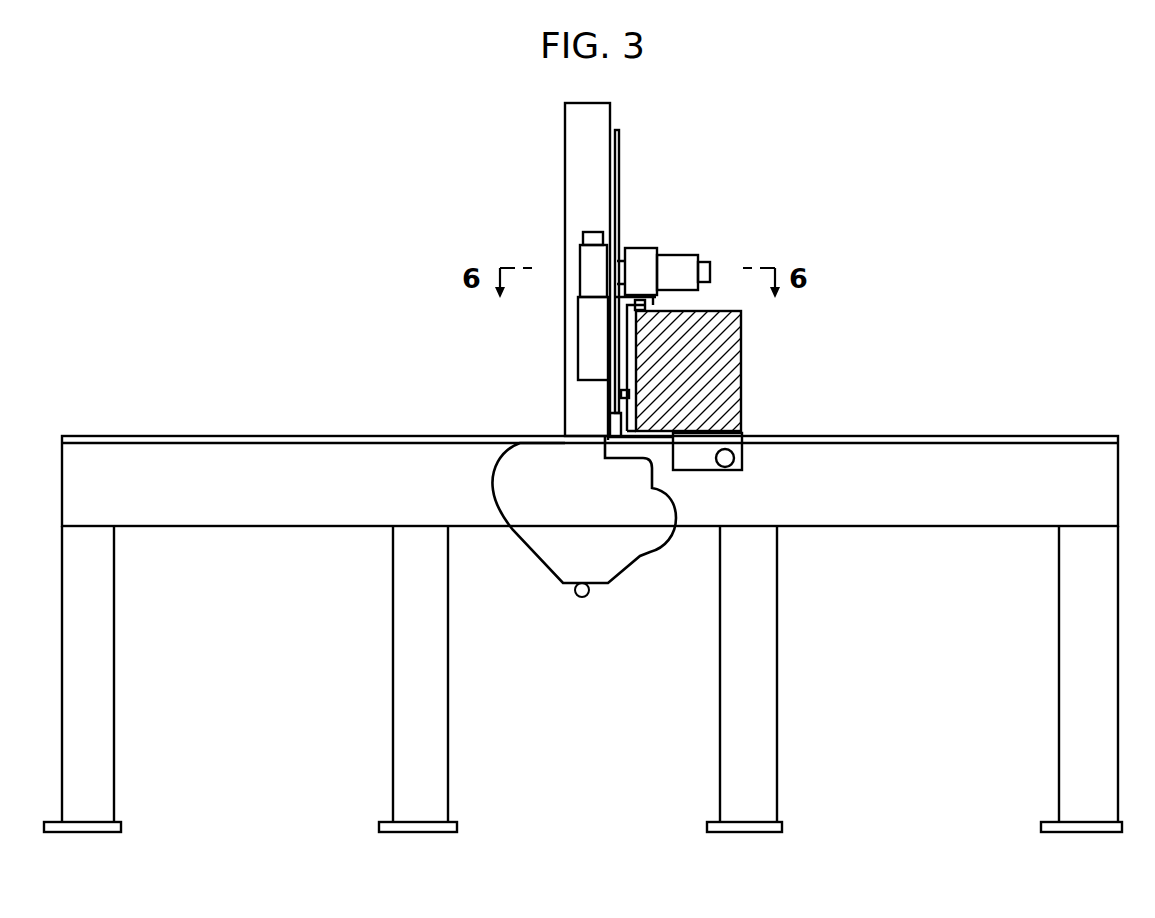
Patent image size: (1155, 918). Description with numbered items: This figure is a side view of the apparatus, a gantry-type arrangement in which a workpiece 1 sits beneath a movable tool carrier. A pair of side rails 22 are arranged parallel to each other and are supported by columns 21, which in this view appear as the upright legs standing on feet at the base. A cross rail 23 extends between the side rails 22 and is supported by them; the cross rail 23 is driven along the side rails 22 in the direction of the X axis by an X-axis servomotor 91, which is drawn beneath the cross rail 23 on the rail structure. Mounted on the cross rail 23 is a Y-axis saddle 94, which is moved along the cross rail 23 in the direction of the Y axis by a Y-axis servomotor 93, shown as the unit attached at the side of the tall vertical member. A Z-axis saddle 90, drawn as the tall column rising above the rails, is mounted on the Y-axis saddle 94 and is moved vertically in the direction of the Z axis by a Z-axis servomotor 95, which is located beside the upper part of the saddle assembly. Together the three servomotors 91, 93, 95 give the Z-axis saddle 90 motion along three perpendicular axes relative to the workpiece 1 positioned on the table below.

The workpiece 1 is at (557, 567).
The columns 21 is at (100, 757).
The side rails 22 is at (949, 485).
The cross rail 23 is at (744, 368).
The Z-axis saddle 90 is at (603, 107).
The X-axis servomotor 91 is at (715, 474).
The Y-axis servomotor 93 is at (582, 252).
The Y-axis saddle 94 is at (618, 358).
The Z-axis servomotor 95 is at (678, 262).